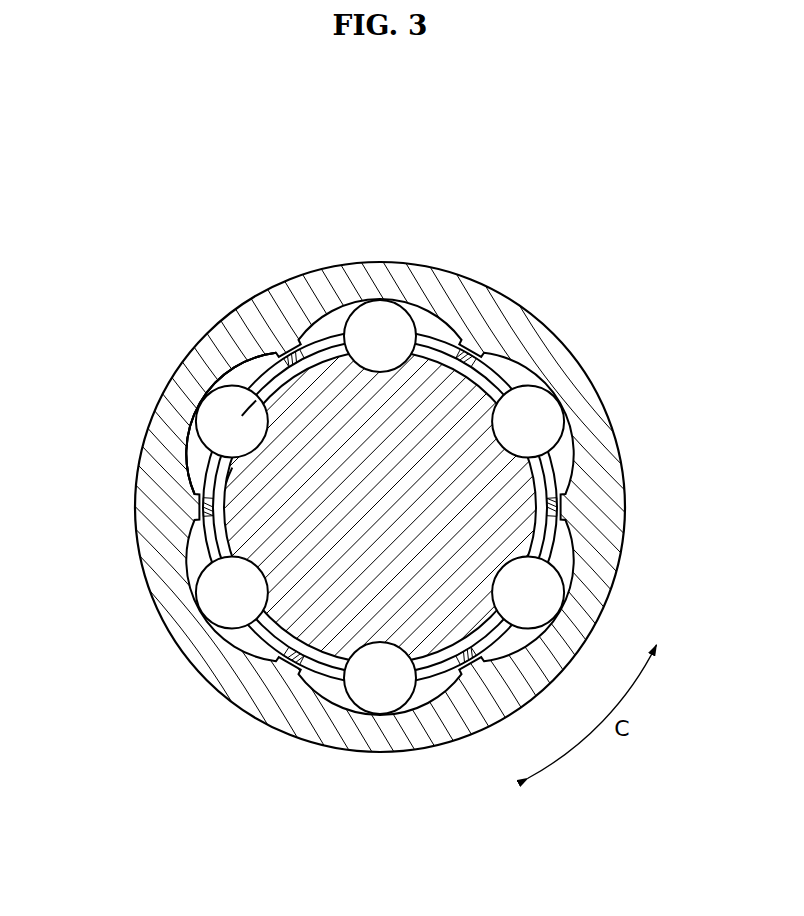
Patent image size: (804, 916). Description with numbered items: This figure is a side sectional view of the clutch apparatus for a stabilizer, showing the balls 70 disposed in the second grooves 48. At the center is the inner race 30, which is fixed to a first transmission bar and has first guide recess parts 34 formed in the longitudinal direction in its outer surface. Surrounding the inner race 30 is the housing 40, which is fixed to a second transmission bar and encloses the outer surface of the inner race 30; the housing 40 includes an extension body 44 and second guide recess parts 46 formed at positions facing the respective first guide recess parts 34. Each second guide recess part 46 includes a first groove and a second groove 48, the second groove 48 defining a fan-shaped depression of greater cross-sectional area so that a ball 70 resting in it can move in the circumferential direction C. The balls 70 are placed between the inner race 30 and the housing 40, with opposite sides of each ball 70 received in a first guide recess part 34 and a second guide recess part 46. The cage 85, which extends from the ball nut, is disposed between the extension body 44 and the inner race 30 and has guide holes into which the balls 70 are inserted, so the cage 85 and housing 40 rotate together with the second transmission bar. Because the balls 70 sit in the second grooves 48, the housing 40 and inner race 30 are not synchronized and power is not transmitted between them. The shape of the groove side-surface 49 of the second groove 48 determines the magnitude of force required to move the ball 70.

The inner race 30 is at (495, 493).
The first guide recess part 34 is at (247, 466).
The housing 40 is at (292, 259).
The extension body 44 is at (240, 328).
The second guide recess part 46 is at (232, 354).
The second groove 48 is at (207, 377).
The groove side-surface 49 is at (153, 422).
The ball 70 is at (378, 330).
The cage 85 is at (447, 347).